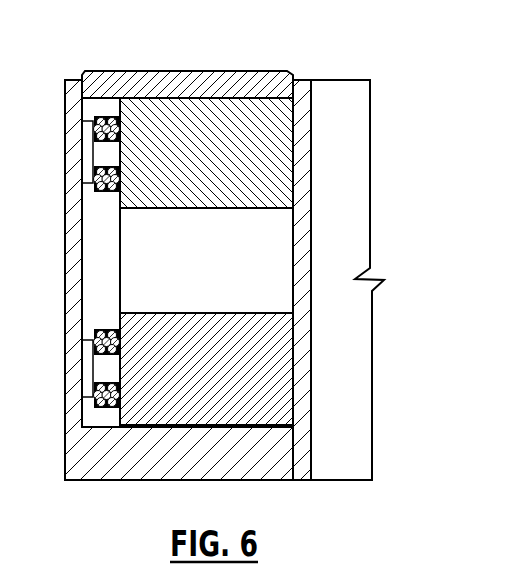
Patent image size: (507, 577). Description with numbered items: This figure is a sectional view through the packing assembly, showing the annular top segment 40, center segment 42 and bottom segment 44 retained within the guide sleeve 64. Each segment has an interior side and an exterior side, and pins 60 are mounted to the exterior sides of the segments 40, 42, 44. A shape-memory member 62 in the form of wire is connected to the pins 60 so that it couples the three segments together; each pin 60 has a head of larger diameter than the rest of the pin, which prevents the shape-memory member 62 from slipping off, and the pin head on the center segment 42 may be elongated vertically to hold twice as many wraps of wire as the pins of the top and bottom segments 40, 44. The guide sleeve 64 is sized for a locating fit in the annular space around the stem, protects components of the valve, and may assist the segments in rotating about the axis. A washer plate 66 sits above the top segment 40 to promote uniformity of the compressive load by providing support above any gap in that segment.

The top segment 40 is at (265, 153).
The center segment 42 is at (221, 273).
The bottom segment 44 is at (258, 375).
The pins 60 is at (103, 150).
The shape-memory member 62 is at (90, 113).
The guide sleeve 64 is at (260, 453).
The washer plate 66 is at (178, 80).